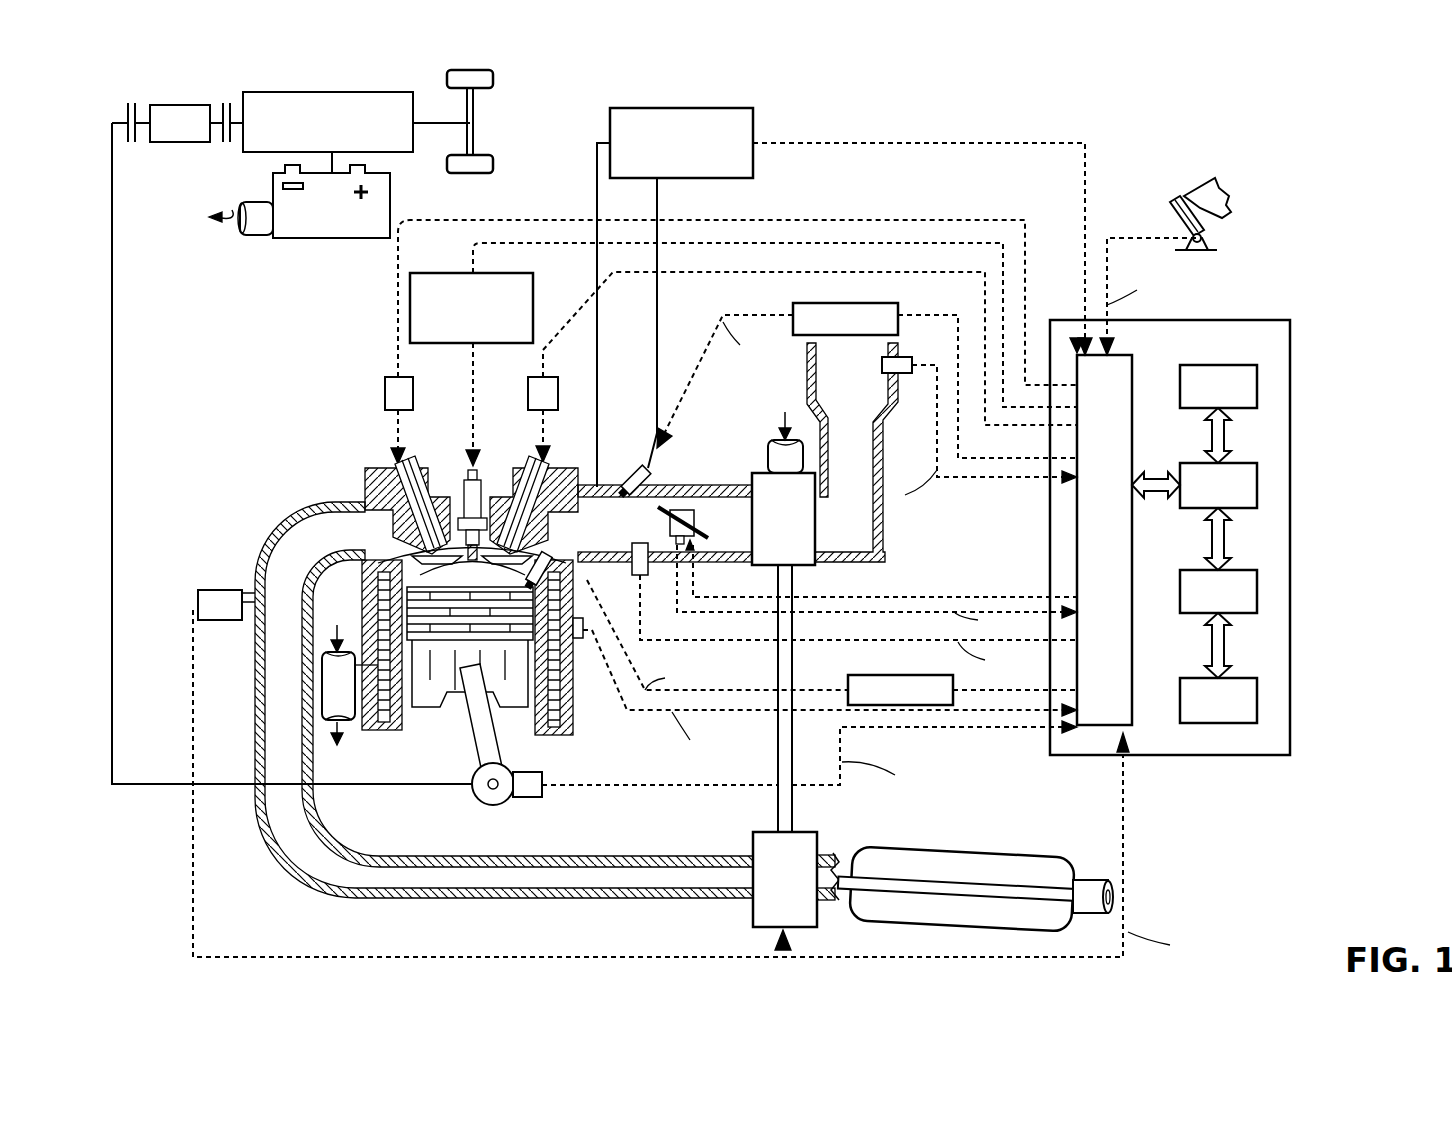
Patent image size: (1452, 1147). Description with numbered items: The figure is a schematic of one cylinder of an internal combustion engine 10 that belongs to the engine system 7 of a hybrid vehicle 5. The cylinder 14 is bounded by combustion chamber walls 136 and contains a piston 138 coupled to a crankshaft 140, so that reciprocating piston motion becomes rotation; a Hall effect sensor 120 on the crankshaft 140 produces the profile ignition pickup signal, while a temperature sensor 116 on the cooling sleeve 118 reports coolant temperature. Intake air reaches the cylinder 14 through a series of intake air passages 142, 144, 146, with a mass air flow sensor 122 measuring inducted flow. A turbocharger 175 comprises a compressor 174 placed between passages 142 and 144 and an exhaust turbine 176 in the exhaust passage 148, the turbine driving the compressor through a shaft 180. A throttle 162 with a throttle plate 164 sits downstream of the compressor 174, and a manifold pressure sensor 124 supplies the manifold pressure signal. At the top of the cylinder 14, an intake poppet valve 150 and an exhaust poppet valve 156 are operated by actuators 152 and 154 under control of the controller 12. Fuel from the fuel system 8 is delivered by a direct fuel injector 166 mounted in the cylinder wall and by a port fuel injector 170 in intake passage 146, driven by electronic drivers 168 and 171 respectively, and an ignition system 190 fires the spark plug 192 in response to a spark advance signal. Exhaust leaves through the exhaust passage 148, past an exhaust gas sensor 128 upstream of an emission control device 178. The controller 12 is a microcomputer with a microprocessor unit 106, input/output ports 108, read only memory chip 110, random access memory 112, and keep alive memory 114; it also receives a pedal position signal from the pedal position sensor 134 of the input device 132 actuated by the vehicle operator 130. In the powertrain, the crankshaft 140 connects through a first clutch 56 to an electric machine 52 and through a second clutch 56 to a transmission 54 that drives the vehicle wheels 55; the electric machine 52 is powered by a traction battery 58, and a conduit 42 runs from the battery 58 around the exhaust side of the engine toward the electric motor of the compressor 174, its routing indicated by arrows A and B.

The vehicle 5 is at (1392, 128).
The engine system 7 is at (1245, 848).
The fuel system 8 is at (718, 108).
The internal combustion engine 10 is at (290, 412).
The controller 12 is at (1290, 320).
The cylinder 14 is at (378, 585).
The conduit 42 is at (258, 235).
The electric machine 52 is at (178, 142).
The transmission 54 is at (390, 152).
The vehicle wheels 55 is at (470, 175).
The clutch 56 is at (128, 110).
The battery 58 is at (330, 238).
The microprocessor unit 106 is at (1257, 482).
The input/output ports 108 is at (1132, 365).
The read only memory chip 110 is at (1257, 378).
The random access memory 112 is at (1257, 592).
The keep alive memory 114 is at (1257, 700).
The temperature sensor 116 is at (585, 640).
The cooling sleeve 118 is at (576, 640).
The Hall effect sensor 120 is at (535, 800).
The mass air flow sensor 122 is at (905, 358).
The manifold pressure sensor 124 is at (645, 577).
The exhaust gas sensor 128 is at (198, 592).
The vehicle operator 130 is at (1228, 198).
The input device 132 is at (1176, 206).
The pedal position sensor 134 is at (1205, 238).
The combustion chamber walls 136 is at (392, 735).
The piston 138 is at (455, 700).
The crankshaft 140 is at (480, 800).
The intake air passage 142 is at (852, 452).
The intake air passage 144 is at (665, 537).
The intake air passage 146 is at (665, 508).
The exhaust passage 148 is at (504, 700).
The intake poppet valve 150 is at (520, 470).
The actuator 152 is at (528, 395).
The actuator 154 is at (385, 385).
The exhaust poppet valve 156 is at (400, 500).
The throttle 162 is at (693, 510).
The throttle plate 164 is at (672, 510).
The fuel injector 166 is at (545, 555).
The electronic driver 168 is at (850, 676).
The fuel injector 170 is at (630, 472).
The electronic driver 171 is at (795, 303).
The compressor 174 is at (783, 519).
The turbocharger 175 is at (783, 952).
The exhaust turbine 176 is at (785, 879).
The emission control device 178 is at (1035, 855).
The shaft 180 is at (793, 795).
The ignition system 190 is at (452, 273).
The spark plug 192 is at (466, 470).